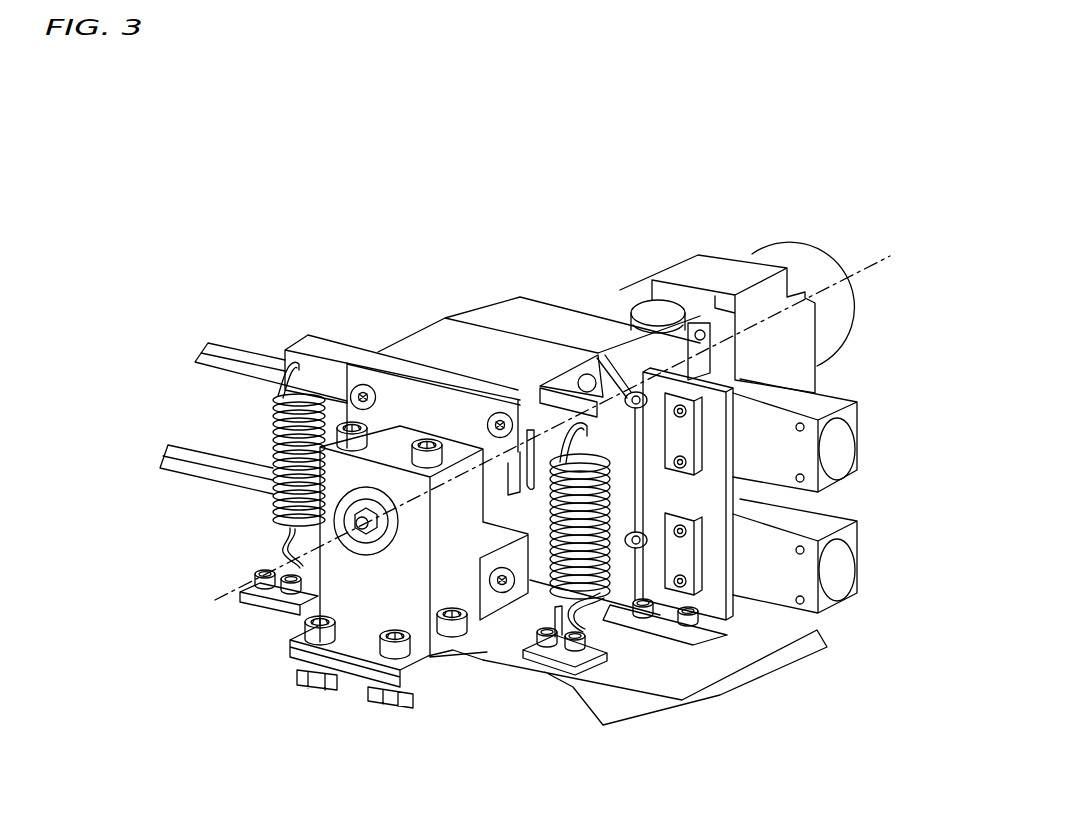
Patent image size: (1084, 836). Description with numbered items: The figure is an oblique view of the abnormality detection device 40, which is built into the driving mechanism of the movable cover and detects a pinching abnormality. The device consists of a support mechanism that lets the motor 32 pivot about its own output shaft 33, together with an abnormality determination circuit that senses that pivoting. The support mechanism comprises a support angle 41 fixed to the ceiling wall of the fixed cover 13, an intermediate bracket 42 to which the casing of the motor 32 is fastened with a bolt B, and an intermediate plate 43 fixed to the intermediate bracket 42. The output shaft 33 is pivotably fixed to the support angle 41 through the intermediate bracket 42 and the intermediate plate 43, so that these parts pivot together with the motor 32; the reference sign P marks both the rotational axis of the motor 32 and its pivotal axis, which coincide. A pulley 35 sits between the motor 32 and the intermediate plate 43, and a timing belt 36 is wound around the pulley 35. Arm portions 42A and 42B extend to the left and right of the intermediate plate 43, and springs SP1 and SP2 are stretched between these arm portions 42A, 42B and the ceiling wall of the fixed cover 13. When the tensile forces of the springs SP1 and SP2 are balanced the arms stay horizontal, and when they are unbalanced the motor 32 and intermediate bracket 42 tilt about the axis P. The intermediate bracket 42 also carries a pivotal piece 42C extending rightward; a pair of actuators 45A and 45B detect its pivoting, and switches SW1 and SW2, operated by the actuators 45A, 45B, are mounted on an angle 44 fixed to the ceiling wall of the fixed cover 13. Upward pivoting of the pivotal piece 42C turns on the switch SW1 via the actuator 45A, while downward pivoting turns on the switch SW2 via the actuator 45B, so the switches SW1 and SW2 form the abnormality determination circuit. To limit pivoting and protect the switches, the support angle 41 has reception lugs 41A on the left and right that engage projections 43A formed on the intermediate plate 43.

The abnormality detection device 40 is at (554, 174).
The motor 32 is at (707, 280).
The actuator 45A is at (637, 392).
The actuator 45B is at (637, 605).
The intermediate bracket 42 is at (470, 340).
The arm portion 42A is at (308, 337).
The arm portion 42B is at (562, 380).
The bolt B is at (592, 385).
The pivotal piece 42C is at (620, 580).
The intermediate plate 43 is at (400, 390).
The projection 43A is at (529, 430).
The timing belt 36 is at (226, 360).
The spring SP1 is at (280, 506).
The spring SP2 is at (575, 592).
The output shaft 33 is at (340, 528).
The rotational axis P is at (528, 449).
The support angle 41 is at (370, 585).
The reception lug 41A is at (500, 577).
The pulley 35 is at (540, 603).
The angle 44 is at (717, 526).
The switch SW1 is at (848, 446).
The switch SW2 is at (848, 570).
The fixed cover 13 is at (718, 660).